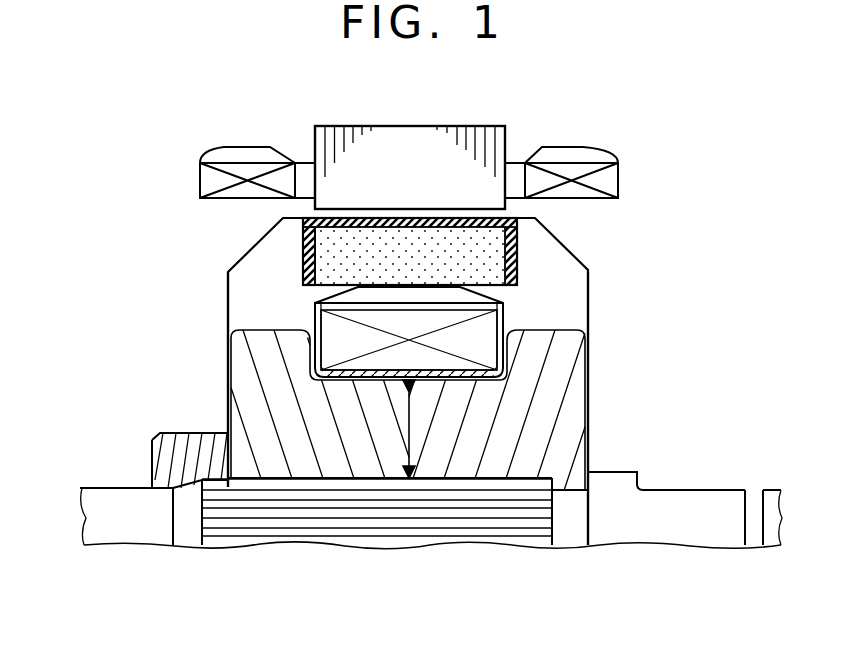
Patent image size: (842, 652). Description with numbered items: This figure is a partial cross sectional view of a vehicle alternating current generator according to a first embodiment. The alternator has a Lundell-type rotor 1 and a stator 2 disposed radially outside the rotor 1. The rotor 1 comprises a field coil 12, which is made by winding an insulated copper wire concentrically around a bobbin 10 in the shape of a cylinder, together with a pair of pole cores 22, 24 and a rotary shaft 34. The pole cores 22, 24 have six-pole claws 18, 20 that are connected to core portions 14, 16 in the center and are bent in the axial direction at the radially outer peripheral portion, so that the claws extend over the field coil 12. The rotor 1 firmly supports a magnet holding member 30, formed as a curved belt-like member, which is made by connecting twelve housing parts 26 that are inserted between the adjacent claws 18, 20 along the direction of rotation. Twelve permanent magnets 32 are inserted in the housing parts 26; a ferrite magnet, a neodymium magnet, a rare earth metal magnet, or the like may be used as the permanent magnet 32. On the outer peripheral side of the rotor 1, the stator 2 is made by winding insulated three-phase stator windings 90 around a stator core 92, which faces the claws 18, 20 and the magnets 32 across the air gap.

The rotor 1 is at (431, 390).
The stator 2 is at (426, 133).
The bobbin 10 is at (505, 336).
The field coil 12 is at (505, 322).
The core portion 14 is at (352, 453).
The core portion 16 is at (462, 453).
The claw 18 is at (322, 300).
The claw 20 is at (517, 296).
The pole core 22 is at (230, 375).
The pole core 24 is at (590, 432).
The housing part 26 is at (308, 263).
The magnet holding member 30 is at (395, 234).
The permanent magnet 32 is at (490, 242).
The rotary shaft 34 is at (690, 520).
The stator winding 90 is at (585, 152).
The stator core 92 is at (338, 125).